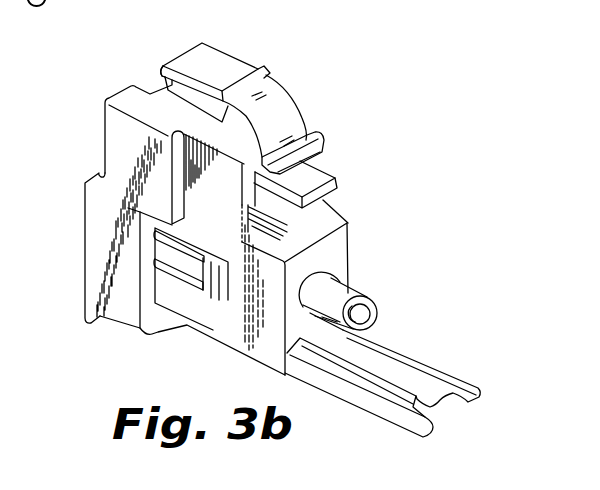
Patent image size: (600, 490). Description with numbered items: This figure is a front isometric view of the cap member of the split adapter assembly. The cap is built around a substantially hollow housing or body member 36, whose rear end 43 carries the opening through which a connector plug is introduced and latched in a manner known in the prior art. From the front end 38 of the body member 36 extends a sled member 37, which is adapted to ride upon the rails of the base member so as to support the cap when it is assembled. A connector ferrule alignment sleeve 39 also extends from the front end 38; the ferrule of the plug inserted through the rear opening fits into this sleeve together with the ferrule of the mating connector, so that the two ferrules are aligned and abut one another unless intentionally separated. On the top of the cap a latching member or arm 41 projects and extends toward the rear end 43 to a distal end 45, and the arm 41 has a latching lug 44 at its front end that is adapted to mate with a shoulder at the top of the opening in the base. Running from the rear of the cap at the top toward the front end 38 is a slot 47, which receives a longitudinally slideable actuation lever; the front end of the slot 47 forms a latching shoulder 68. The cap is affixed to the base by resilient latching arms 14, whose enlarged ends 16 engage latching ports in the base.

The resilient latching arm 14 is at (190, 265).
The enlarged end 16 is at (208, 285).
The body member 36 is at (120, 130).
The sled member 37 is at (393, 413).
The front end 38 is at (350, 252).
The connector ferrule alignment sleeve 39 is at (343, 295).
The latching arm 41 is at (203, 63).
The rear end 43 is at (85, 245).
The latching lug 44 is at (264, 75).
The distal end 45 is at (163, 68).
The slot 47 is at (303, 178).
The latching shoulder 68 is at (322, 197).